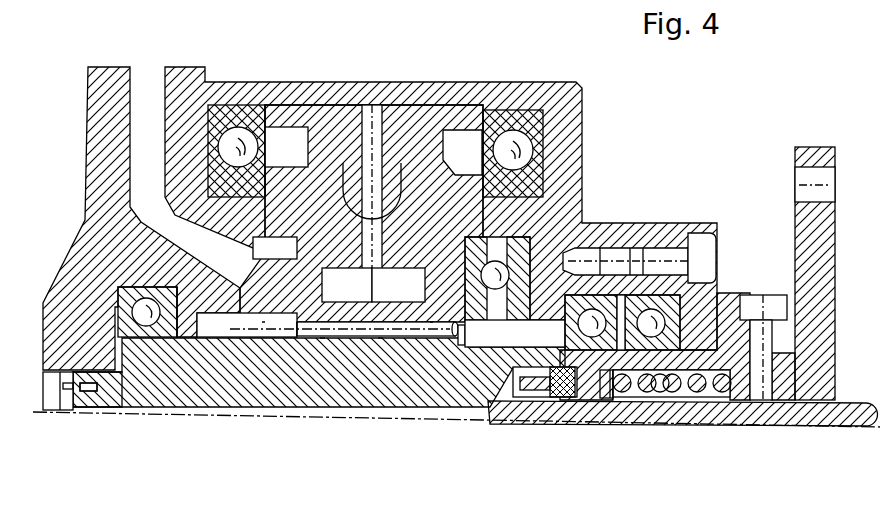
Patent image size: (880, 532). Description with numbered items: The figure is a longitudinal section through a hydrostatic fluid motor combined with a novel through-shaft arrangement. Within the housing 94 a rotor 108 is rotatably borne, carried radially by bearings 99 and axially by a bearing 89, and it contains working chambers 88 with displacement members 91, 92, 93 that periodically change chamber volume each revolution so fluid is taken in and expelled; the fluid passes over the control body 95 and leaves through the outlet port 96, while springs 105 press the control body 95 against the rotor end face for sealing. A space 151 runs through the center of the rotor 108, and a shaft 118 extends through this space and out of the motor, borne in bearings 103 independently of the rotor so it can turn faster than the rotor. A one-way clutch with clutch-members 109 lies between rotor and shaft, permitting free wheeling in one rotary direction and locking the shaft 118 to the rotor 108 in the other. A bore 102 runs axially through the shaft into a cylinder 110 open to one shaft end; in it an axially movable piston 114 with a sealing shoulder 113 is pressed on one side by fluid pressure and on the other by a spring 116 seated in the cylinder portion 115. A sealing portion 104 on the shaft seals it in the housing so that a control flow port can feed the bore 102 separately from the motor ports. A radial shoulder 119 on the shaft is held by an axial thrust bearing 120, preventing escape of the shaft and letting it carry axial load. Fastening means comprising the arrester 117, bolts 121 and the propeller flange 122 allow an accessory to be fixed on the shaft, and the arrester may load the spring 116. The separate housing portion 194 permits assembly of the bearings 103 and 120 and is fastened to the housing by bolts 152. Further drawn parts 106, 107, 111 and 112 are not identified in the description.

The working chambers 88 is at (394, 255).
The bearing 89 is at (598, 228).
The displacement member 91 is at (350, 255).
The displacement member 92 is at (425, 143).
The displacement member 93 is at (286, 147).
The housing 94 is at (568, 149).
The control body 95 is at (235, 312).
The outlet port 96 is at (150, 134).
The bearings 99 is at (228, 142).
The bore 102 is at (157, 410).
The bearings 103 is at (137, 325).
The sealing portion 104 is at (92, 392).
The springs 105 is at (190, 388).
The shaft 106 is at (252, 336).
The bushing 107 is at (262, 338).
The rotor 108 is at (322, 390).
The clutch-members 109 is at (380, 350).
The cylinder 110 is at (505, 333).
The seal 111 is at (523, 392).
The seal ring 112 is at (546, 388).
The shoulder 113 is at (603, 352).
The piston 114 is at (57, 405).
The cylinder portion 115 is at (659, 398).
The spring 116 is at (692, 398).
The arrester 117 is at (724, 407).
The shaft 118 is at (405, 392).
The radial shoulder 119 is at (612, 392).
The axial thrust bearing 120 is at (630, 300).
The bolts 121 is at (749, 296).
The flange 122 is at (815, 285).
The space 151 is at (297, 338).
The bolts 152 is at (680, 255).
The housing portion 194 is at (662, 225).